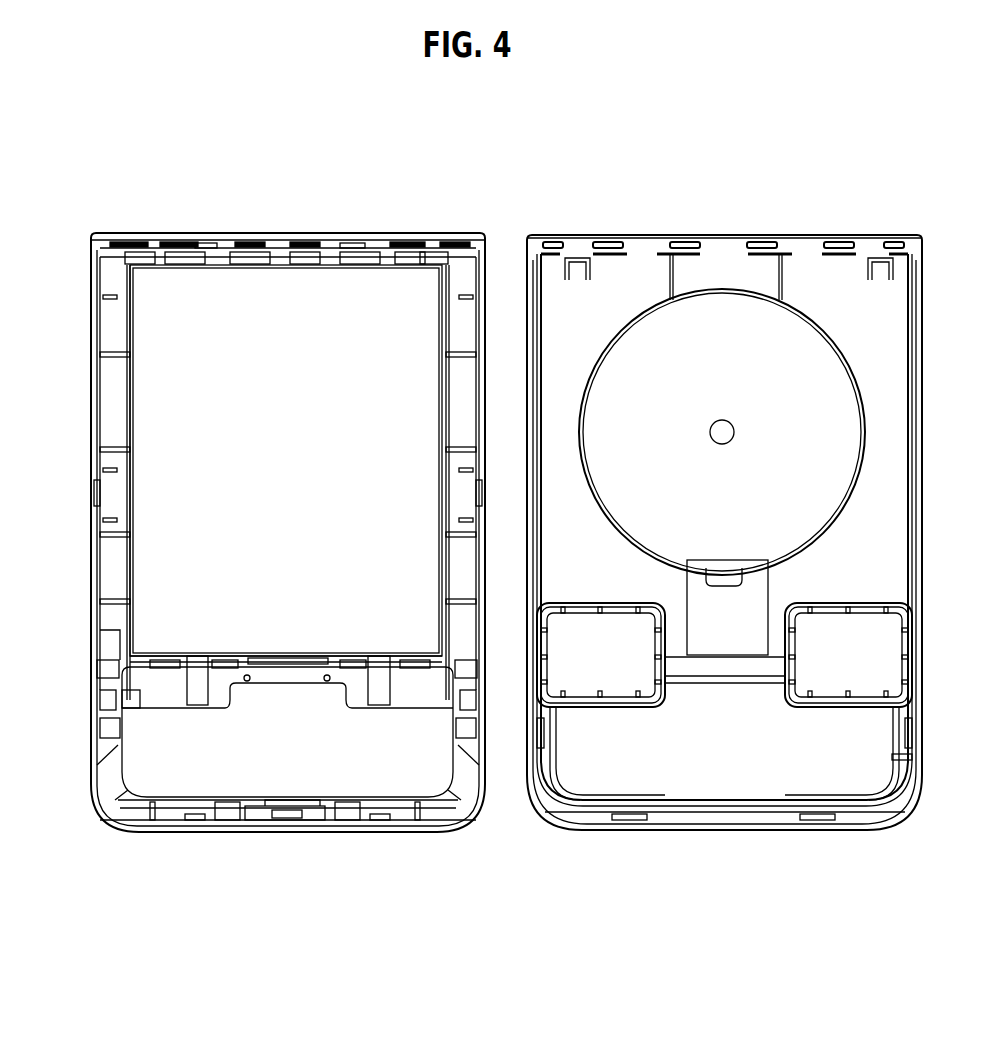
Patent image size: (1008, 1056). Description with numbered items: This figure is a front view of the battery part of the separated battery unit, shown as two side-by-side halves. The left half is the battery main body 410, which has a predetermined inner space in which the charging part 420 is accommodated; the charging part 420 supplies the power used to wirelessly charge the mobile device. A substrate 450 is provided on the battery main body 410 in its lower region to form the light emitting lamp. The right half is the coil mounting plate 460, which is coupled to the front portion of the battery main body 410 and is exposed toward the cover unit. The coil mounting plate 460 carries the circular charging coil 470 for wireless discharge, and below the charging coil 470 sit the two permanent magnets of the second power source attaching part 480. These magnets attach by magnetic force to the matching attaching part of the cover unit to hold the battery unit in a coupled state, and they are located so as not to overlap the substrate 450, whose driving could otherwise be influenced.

The battery main body 410 is at (113, 324).
The charging part 420 is at (165, 388).
The substrate 450 is at (168, 783).
The coil mounting plate 460 is at (637, 295).
The charging coil 470 is at (795, 372).
The second power source attaching part 480 is at (615, 680).